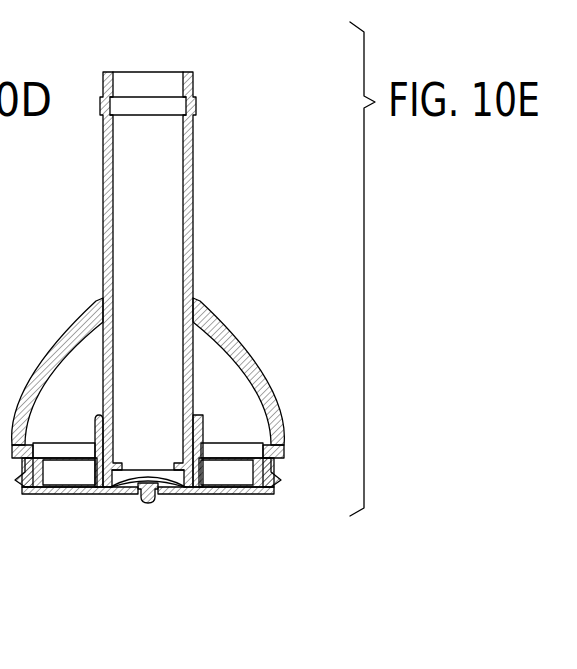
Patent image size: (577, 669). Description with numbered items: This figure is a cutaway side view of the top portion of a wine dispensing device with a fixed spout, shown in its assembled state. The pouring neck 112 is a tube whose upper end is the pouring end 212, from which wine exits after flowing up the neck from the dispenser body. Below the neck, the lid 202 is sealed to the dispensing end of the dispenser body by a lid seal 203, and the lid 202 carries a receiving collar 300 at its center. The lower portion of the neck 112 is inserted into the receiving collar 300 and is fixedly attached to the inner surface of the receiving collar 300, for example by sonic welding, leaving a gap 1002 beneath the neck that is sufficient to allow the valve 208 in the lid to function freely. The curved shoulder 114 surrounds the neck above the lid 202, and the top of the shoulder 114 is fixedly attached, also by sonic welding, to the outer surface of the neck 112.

The pouring neck 112 is at (197, 204).
The pouring end 212 is at (195, 84).
The shoulder 114 is at (252, 352).
The receiving collar 300 is at (99, 416).
The lid 202 is at (228, 499).
The lid seal 203 is at (279, 477).
The gap 1002 is at (176, 483).
The valve 208 is at (155, 510).